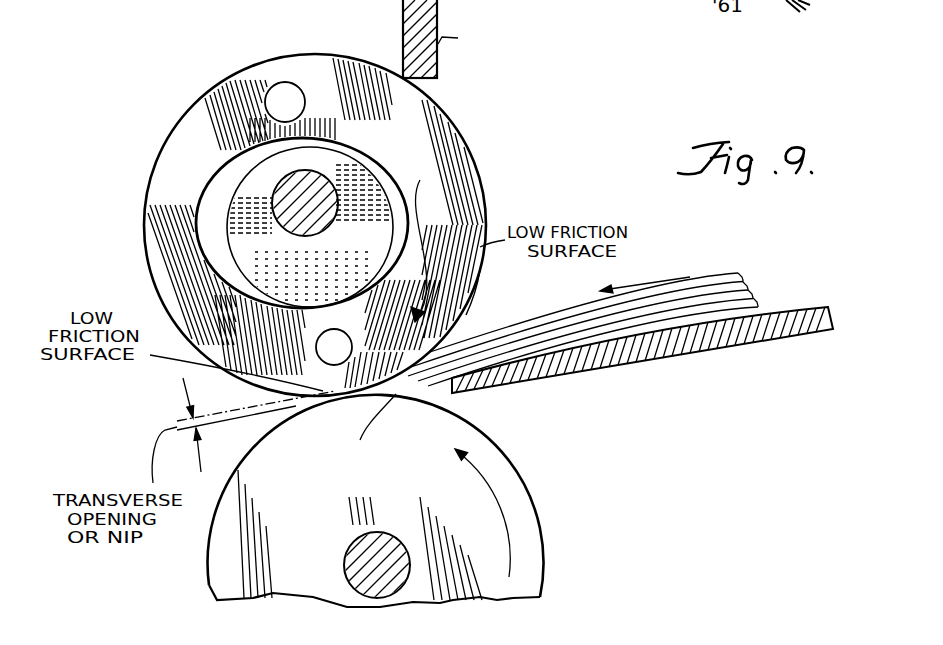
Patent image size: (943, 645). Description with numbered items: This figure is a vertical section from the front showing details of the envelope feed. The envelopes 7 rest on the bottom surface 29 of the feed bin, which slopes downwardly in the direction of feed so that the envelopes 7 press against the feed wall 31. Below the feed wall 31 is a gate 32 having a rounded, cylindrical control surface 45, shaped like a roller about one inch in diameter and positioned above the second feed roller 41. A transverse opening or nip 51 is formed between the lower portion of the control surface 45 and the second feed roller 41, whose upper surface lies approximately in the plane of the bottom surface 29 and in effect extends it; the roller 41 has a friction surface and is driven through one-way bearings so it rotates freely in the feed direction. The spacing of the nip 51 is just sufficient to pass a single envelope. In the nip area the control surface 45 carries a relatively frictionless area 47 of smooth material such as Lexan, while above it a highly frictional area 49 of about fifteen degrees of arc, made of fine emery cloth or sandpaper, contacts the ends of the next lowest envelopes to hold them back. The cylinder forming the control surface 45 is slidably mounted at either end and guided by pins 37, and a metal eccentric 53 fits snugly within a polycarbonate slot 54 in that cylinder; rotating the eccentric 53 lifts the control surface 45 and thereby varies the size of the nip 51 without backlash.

The envelopes 7 is at (722, 272).
The bottom surface 29 is at (810, 308).
The feed wall 31 is at (438, 58).
The gate 32 is at (452, 124).
The pins 37 is at (283, 99).
The second feed roller 41 is at (560, 544).
The cylindrical control surface 45 is at (466, 300).
The frictionless area 47 is at (327, 392).
The highly frictional area 49 is at (372, 382).
The transverse opening or nip 51 is at (290, 407).
The eccentric 53 is at (256, 185).
The slot 54 is at (410, 200).